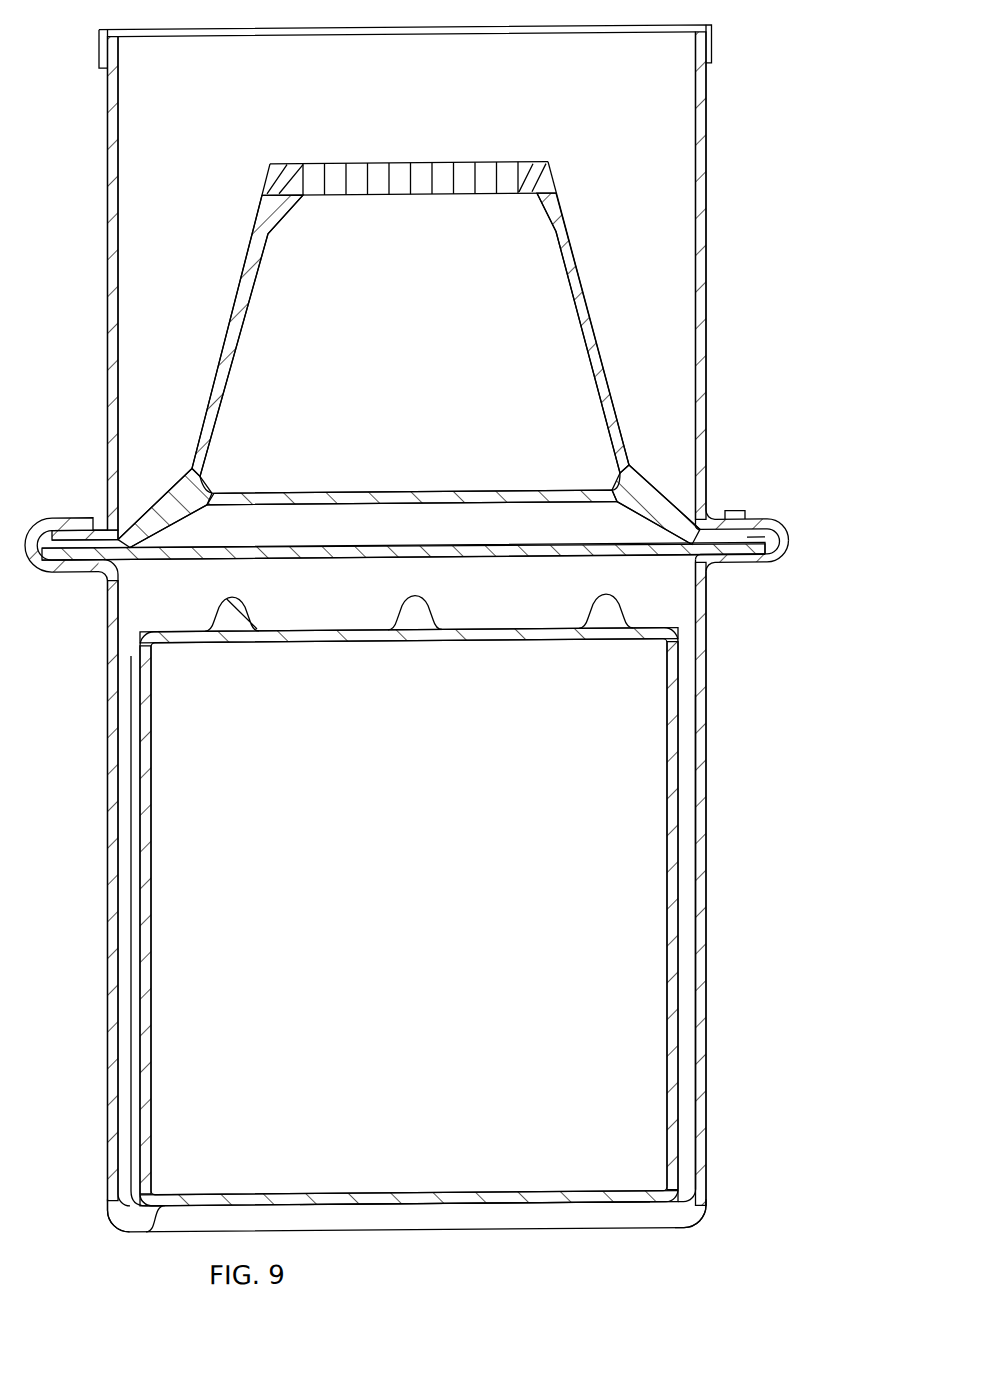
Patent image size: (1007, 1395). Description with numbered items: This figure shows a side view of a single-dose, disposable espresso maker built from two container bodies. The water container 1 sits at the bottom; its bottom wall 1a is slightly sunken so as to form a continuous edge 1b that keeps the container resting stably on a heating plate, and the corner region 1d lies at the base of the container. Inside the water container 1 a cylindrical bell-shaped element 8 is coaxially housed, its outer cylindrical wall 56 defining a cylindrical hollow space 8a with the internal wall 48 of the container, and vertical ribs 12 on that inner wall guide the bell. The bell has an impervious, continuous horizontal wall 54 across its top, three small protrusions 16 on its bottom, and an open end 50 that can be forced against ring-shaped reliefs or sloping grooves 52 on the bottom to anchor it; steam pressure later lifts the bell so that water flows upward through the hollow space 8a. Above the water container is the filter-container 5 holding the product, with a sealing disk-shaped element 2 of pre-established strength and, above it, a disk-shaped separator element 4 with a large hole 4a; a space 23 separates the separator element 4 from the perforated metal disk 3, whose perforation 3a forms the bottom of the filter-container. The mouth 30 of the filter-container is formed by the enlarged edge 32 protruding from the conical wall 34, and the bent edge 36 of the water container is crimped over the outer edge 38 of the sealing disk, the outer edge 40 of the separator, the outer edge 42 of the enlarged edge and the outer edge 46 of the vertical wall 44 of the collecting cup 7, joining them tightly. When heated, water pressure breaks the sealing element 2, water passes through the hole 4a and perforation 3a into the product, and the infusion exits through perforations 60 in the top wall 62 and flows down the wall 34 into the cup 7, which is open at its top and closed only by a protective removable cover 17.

The water container 1 is at (705, 717).
The bottom wall 1a is at (428, 1197).
The continuous edge 1b is at (694, 1230).
The container bottom left corner 1d is at (130, 1233).
The sealing disk-shaped element 2 is at (507, 565).
The perforated metal disk 3 is at (265, 498).
The perforation 3a is at (447, 496).
The disk-shaped separator element 4 is at (230, 551).
The hole 4a is at (387, 551).
The filter-container 5 is at (579, 286).
The cup 7 is at (107, 384).
The bell-shaped element 8 is at (150, 962).
The cylindrical hollow space 8a is at (697, 976).
The vertical ribs 12 is at (110, 725).
The small protrusions 16 is at (222, 613).
The protective removable cover 17 is at (594, 25).
The space 23 is at (186, 542).
The mouth 30 is at (617, 509).
The enlarged edge 32 is at (659, 512).
The conical wall 34 is at (601, 363).
The bent edge 36 is at (787, 530).
The outer edge of sealing disk element 38 is at (762, 569).
The outer edge of separator element 40 is at (781, 561).
The outer edge of enlarged edge 42 is at (769, 545).
The vertical wall 44 is at (707, 254).
The outer edge of vertical wall 46 is at (741, 515).
The internal wall 48 is at (700, 819).
The open end 50 is at (553, 1186).
The ring-shaped reliefs or sloping grooves 52 is at (668, 1200).
The horizontal wall 54 is at (422, 648).
The outer cylindrical wall 56 is at (153, 832).
The perforations 60 is at (508, 172).
The top wall 62 is at (289, 165).